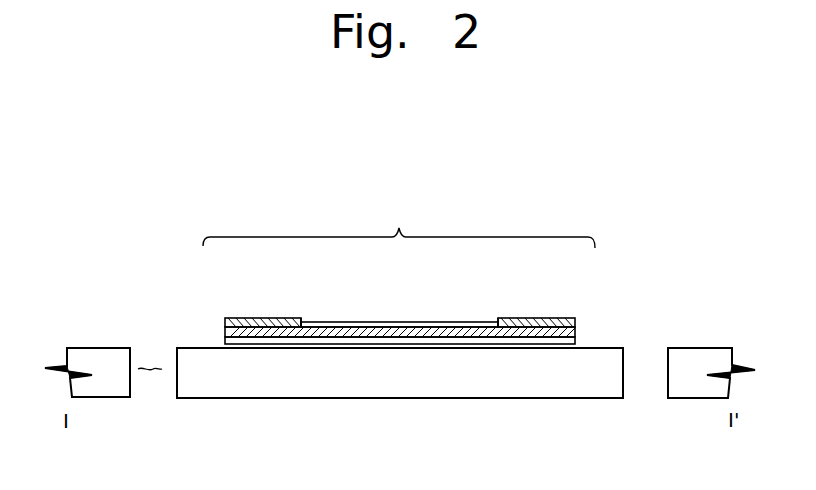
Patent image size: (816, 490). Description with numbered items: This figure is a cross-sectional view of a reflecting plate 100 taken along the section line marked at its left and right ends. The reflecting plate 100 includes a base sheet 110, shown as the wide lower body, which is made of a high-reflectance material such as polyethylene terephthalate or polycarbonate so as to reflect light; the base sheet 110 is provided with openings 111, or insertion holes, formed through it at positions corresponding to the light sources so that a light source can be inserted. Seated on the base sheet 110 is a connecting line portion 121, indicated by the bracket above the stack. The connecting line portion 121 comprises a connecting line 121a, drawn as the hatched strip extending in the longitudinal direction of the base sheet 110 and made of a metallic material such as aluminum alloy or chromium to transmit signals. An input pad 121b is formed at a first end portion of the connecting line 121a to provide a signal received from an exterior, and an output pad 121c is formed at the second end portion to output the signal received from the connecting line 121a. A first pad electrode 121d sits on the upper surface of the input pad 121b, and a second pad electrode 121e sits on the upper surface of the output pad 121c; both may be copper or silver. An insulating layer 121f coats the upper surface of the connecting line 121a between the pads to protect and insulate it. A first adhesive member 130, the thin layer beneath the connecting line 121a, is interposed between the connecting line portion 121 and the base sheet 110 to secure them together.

The reflecting plate 100 is at (713, 182).
The base sheet 110 is at (565, 386).
The openings (insertion holes) 111 is at (148, 366).
The connecting line portion 121 is at (399, 224).
The connecting line 121a is at (367, 332).
The input pad 121b is at (502, 318).
The output pad 121c is at (295, 318).
The first pad electrode 121d is at (568, 318).
The second pad electrode 121e is at (227, 318).
The insulating layer 121f is at (437, 323).
The first adhesive member 130 is at (409, 343).